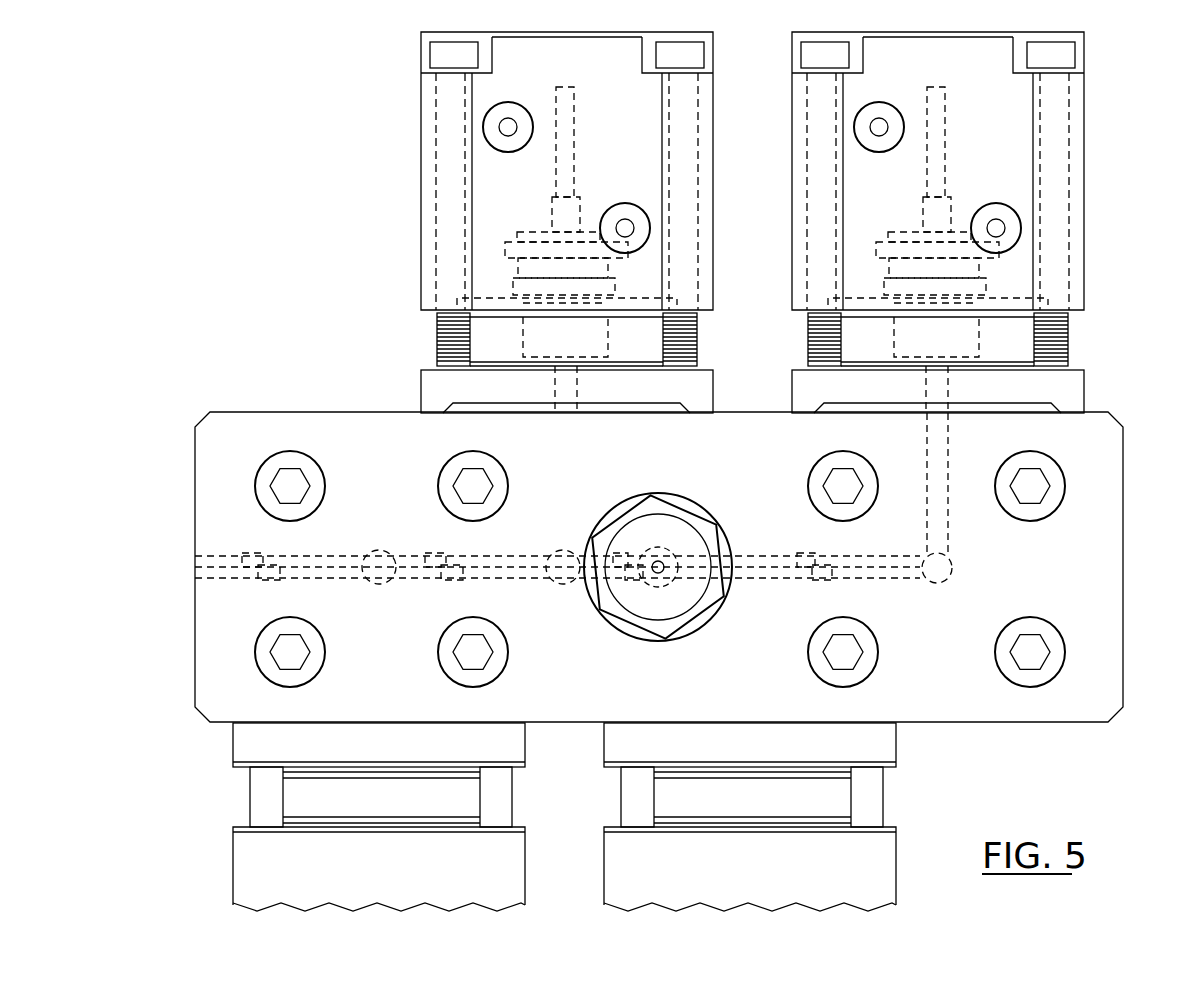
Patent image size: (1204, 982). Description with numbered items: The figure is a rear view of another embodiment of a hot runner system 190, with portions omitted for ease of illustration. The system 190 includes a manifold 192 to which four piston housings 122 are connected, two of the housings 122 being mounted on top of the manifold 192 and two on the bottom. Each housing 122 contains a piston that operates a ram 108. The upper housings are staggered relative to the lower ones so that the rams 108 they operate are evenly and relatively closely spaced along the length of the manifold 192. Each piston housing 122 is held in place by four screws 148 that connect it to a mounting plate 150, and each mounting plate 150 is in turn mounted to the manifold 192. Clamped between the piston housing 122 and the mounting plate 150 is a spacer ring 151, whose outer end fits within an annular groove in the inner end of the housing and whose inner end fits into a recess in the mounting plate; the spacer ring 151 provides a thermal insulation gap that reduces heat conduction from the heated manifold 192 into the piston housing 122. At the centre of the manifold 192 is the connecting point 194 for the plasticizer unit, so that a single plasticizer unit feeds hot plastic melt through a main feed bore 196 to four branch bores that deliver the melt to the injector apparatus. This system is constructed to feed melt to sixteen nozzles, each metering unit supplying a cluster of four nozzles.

The ram 108 is at (950, 490).
The piston housing 122 is at (430, 215).
The screws 148 is at (437, 346).
The mounting plate 150 is at (1075, 390).
The spacer ring 151 is at (482, 338).
The hot runner system 190 is at (345, 393).
The manifold 192 is at (1103, 483).
The connecting point 194 is at (661, 563).
The main feed bore 196 is at (860, 573).